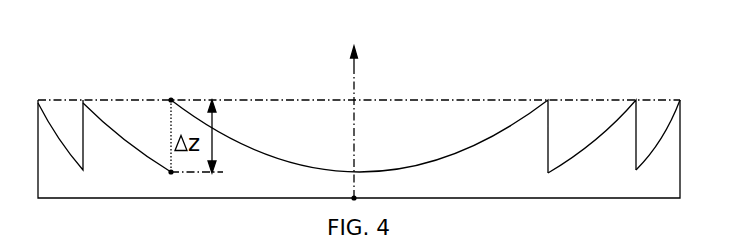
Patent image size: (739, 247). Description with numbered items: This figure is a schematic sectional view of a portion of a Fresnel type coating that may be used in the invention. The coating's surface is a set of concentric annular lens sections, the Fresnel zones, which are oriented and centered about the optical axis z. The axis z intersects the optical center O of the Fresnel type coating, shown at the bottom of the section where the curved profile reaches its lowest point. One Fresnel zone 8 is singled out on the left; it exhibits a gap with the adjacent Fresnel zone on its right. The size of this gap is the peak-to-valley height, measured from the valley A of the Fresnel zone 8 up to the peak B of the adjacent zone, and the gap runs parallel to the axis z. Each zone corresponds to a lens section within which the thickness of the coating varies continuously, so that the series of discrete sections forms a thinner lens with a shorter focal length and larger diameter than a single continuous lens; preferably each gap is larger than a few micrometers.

The Fresnel zone 8 is at (168, 86).
The valley A is at (162, 180).
The peak B is at (176, 90).
The optical center O is at (345, 190).
The optical axis z is at (342, 118).